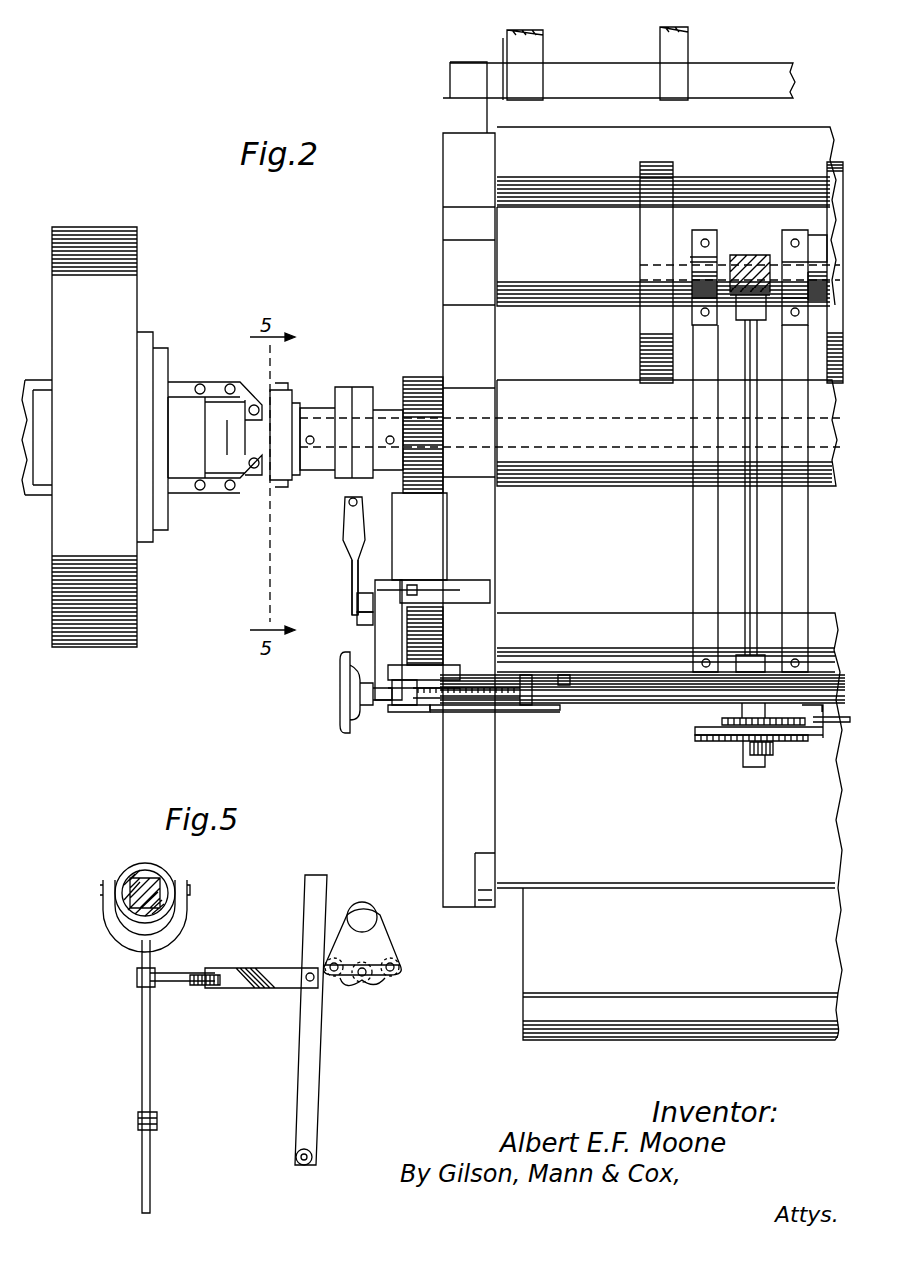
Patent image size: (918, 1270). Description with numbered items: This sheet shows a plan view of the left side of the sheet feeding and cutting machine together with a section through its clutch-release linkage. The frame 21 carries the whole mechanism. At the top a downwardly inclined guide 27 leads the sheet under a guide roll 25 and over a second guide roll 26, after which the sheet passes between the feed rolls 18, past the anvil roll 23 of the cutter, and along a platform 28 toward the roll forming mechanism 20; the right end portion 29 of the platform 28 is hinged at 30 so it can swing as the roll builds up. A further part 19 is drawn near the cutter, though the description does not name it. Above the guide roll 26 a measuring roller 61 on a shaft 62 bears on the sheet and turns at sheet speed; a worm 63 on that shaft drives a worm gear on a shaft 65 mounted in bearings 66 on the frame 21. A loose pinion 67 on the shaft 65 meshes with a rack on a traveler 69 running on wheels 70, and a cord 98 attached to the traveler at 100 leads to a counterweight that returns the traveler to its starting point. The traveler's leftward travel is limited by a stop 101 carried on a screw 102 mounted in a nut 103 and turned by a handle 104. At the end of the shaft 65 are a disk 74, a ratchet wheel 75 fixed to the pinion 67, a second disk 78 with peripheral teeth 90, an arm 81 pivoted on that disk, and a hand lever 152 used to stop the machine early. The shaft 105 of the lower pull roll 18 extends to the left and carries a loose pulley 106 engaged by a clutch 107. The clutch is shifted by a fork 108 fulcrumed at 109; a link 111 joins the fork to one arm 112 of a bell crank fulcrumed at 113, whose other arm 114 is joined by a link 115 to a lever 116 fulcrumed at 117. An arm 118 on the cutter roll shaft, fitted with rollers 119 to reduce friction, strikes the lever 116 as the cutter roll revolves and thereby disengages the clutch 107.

In FIG. 2, the downwardly inclined guide 27 is at (583, 75).
In FIG. 2, the guide roll 25 is at (762, 135).
In FIG. 2, the guide roll 26 is at (575, 255).
In FIG. 2, the roller 61 is at (835, 170).
In FIG. 2, the shaft 62 is at (706, 258).
In FIG. 2, the worm 63 is at (745, 256).
In FIG. 2, the bearings 66 is at (747, 318).
In FIG. 2, the shaft 65 is at (750, 542).
In FIG. 2, the shaft of the lower pull roll 105 is at (600, 445).
In FIG. 5, the shaft of the lower pull roll 105 is at (138, 882).
In FIG. 2, the feed rolls 18 is at (542, 478).
In FIG. 2, the plate 19 is at (548, 614).
In FIG. 2, the anvil roll 23 is at (612, 628).
In FIG. 2, the loose pinion 67 is at (750, 690).
In FIG. 2, the traveler 69 is at (633, 692).
In FIG. 2, the wheels 70 is at (562, 700).
In FIG. 2, the screw 102 is at (505, 707).
In FIG. 2, the attachment point of cord to traveler 100 is at (536, 710).
In FIG. 2, the cord 98 is at (473, 713).
In FIG. 2, the ratchet wheel 75 is at (722, 720).
In FIG. 2, the disk 74 is at (695, 730).
In FIG. 2, the second disk 78 is at (695, 742).
In FIG. 2, the arm 81 is at (773, 748).
In FIG. 2, the hand lever 152 is at (748, 767).
In FIG. 2, the platform 28 is at (669, 780).
In FIG. 2, the hinge 30 is at (489, 900).
In FIG. 2, the right end portion of the platform 29 is at (682, 964).
In FIG. 2, the stop 101 is at (567, 1020).
In FIG. 2, the roll forming mechanism 20 is at (660, 1020).
In FIG. 2, the frame 21 is at (445, 805).
In FIG. 2, the loose pulley 106 is at (135, 268).
In FIG. 2, the clutch 107 is at (217, 383).
In FIG. 2, the fork 108 is at (290, 392).
In FIG. 5, the fork 108 is at (142, 952).
In FIG. 2, the link 111 is at (318, 425).
In FIG. 5, the link 111 is at (140, 983).
In FIG. 2, the arm of the bell crank 112 is at (392, 470).
In FIG. 5, the arm of the bell crank 112 is at (173, 975).
In FIG. 2, the fulcrum of the bell crank 113 is at (425, 495).
In FIG. 5, the fulcrum of the bell crank 113 is at (198, 986).
In FIG. 2, the arm of the bell crank 114 is at (372, 503).
In FIG. 5, the arm of the bell crank 114 is at (222, 988).
In FIG. 2, the link 115 is at (352, 578).
In FIG. 5, the link 115 is at (268, 984).
In FIG. 2, the lever 116 is at (357, 602).
In FIG. 5, the lever 116 is at (310, 913).
In FIG. 2, the rollers 119 is at (357, 620).
In FIG. 5, the rollers 119 is at (380, 985).
In FIG. 2, the arm 118 is at (365, 642).
In FIG. 5, the arm 118 is at (390, 945).
In FIG. 2, the handle 104 is at (340, 712).
In FIG. 2, the teeth 90 is at (400, 712).
In FIG. 2, the nut 103 is at (410, 708).
In FIG. 5, the fulcrum of the fork 109 is at (138, 1118).
In FIG. 5, the fulcrum of the lever 117 is at (300, 1157).